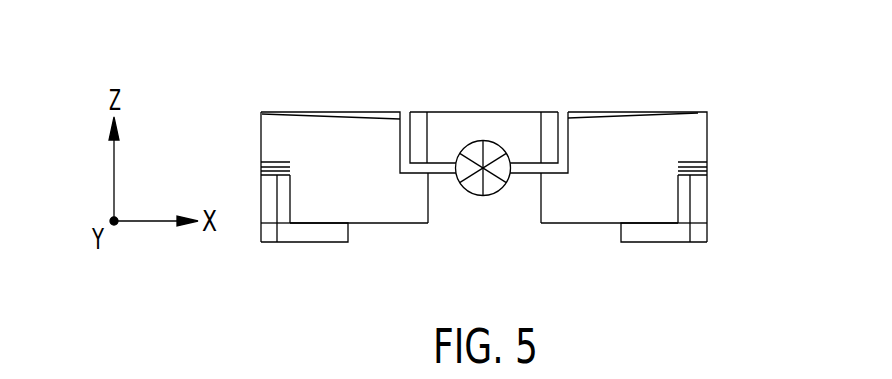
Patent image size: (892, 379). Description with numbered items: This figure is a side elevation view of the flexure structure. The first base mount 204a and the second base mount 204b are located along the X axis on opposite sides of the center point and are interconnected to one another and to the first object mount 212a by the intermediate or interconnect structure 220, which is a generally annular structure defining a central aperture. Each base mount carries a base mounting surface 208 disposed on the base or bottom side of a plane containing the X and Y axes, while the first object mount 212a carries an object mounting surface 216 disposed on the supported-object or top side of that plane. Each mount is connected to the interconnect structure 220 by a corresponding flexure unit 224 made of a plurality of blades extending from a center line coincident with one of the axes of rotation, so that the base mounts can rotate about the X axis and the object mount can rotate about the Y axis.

The first base mount 204a is at (677, 232).
The second base mount 204b is at (317, 232).
The base mounting surface 208 is at (290, 242).
The first object mount 212a is at (537, 116).
The object mounting surface 216 is at (429, 112).
The interconnect structure 220 is at (698, 133).
The flexure unit 224 is at (491, 146).